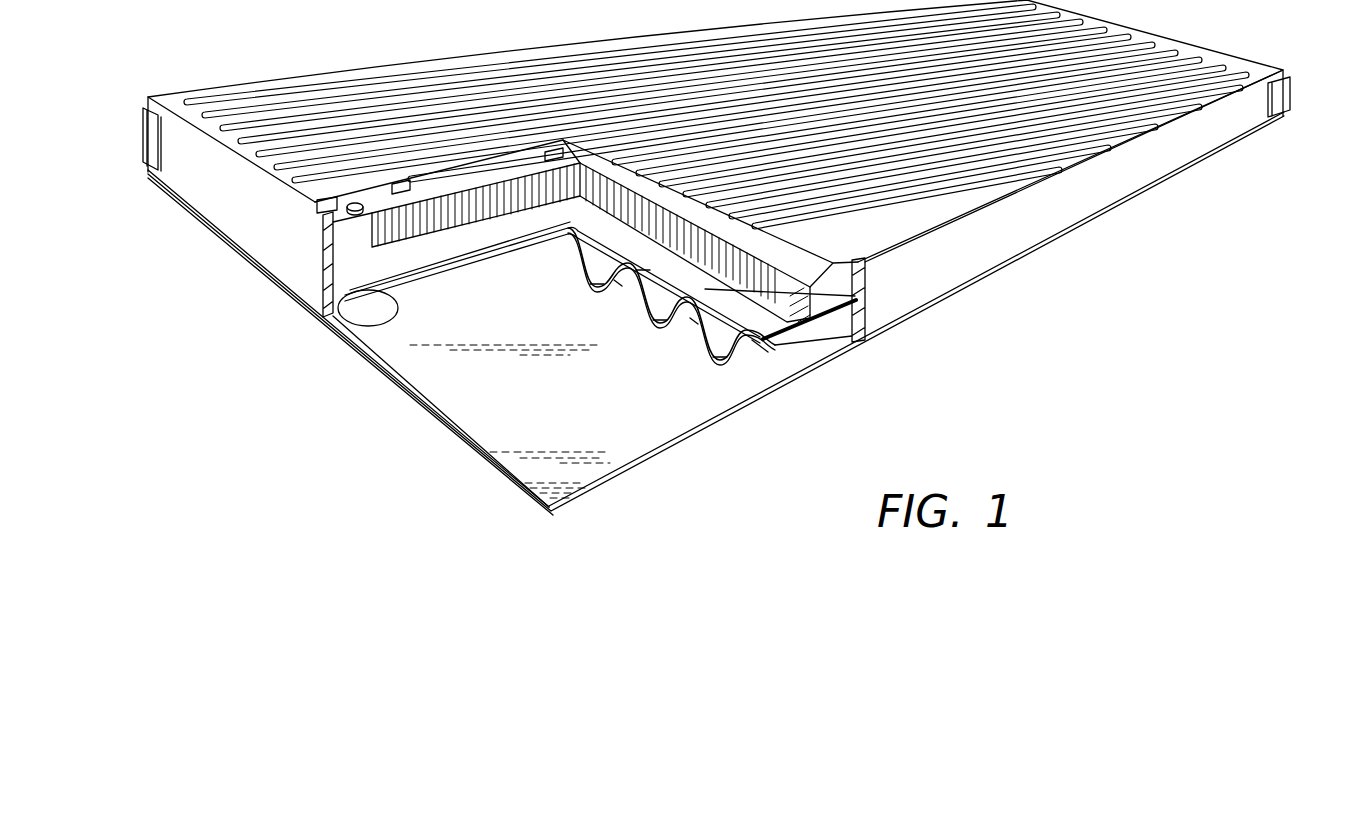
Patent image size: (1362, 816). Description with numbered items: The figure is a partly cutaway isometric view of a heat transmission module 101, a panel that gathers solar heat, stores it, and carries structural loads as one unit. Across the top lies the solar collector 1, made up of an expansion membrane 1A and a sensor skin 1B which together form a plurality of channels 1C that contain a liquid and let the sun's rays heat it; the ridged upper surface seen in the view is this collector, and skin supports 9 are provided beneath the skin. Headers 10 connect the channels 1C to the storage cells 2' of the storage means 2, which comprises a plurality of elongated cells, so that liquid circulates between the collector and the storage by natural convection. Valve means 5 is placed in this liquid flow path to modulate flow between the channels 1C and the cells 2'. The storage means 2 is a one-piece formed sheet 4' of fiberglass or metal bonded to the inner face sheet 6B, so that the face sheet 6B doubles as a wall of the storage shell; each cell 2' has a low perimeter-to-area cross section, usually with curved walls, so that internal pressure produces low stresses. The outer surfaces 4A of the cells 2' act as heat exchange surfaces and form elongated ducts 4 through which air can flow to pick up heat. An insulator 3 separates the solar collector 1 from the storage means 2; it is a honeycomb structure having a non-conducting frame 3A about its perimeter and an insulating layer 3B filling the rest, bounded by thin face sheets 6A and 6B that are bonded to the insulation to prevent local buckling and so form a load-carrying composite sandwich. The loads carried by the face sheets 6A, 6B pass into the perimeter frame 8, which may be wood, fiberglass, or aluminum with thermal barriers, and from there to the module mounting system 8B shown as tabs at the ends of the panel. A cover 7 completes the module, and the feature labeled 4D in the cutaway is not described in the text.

The heat transmission module 101 is at (368, 390).
The solar collector 1 is at (862, 310).
The expansion membrane 1A is at (714, 255).
The sensor skin 1B is at (1180, 47).
The channels 1C is at (682, 206).
The storage means 2 is at (607, 296).
The storage cells 2' is at (637, 338).
The insulator 3 is at (487, 200).
The non-conducting frame 3A is at (803, 344).
The insulating layer 3B is at (615, 203).
The elongated ducts 4 is at (633, 294).
The formed sheet 4' is at (775, 386).
The outer surfaces 4A is at (616, 283).
The spacer disc 4D is at (348, 326).
The valve means 5 is at (345, 244).
The face sheet 6A is at (410, 190).
The inner face sheet 6B is at (437, 267).
The cover 7 is at (563, 432).
The perimeter frame 8 is at (180, 190).
The mounting system 8B is at (152, 133).
The skin supports 9 is at (543, 157).
The headers 10 is at (320, 202).